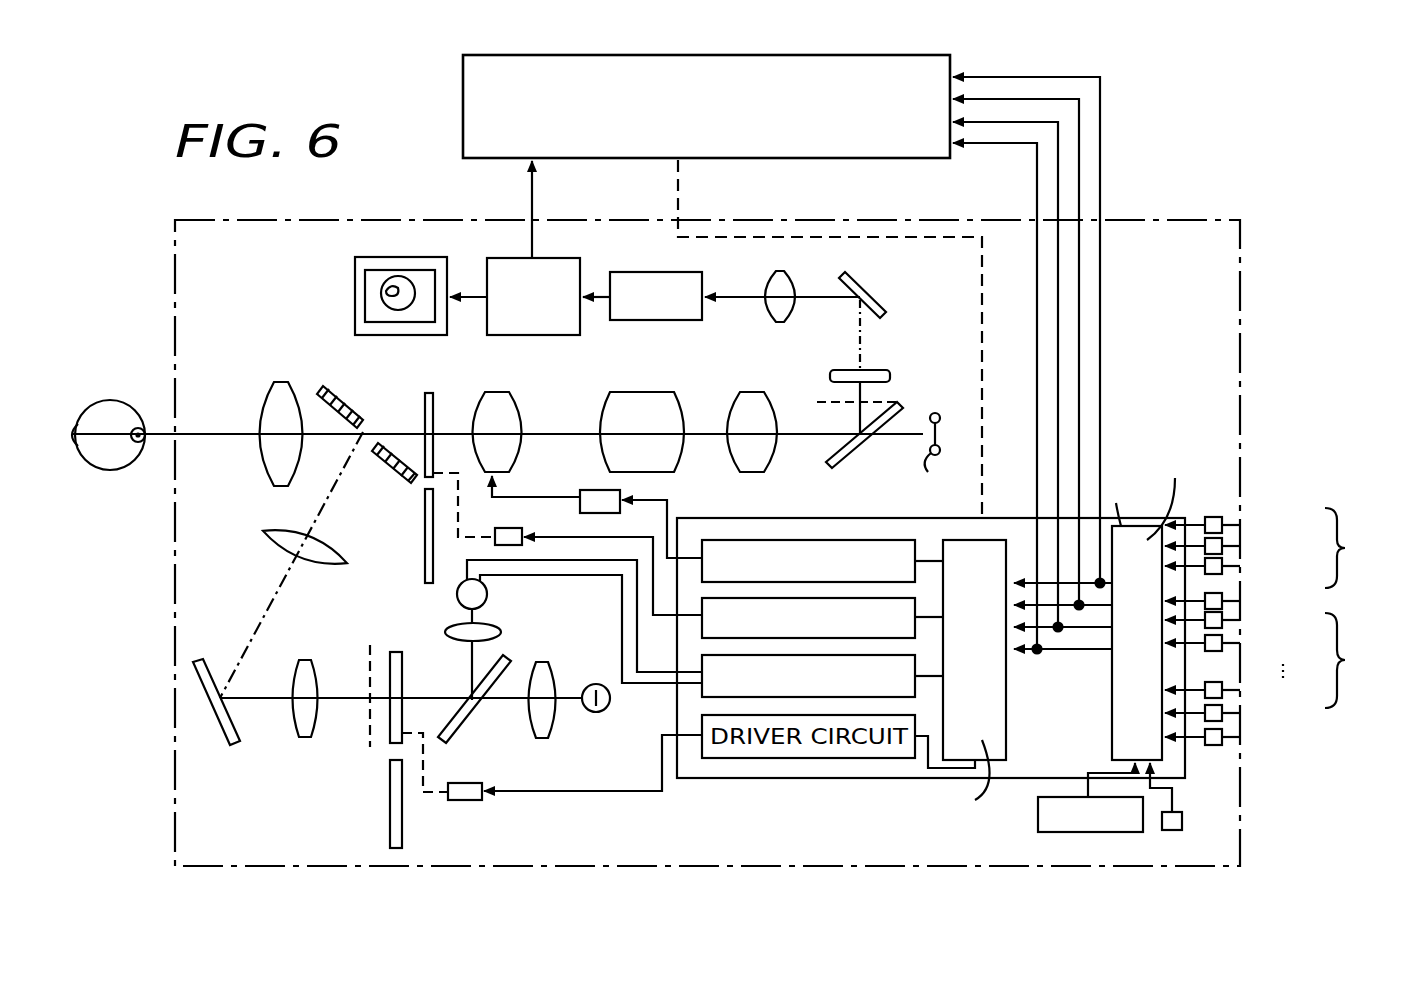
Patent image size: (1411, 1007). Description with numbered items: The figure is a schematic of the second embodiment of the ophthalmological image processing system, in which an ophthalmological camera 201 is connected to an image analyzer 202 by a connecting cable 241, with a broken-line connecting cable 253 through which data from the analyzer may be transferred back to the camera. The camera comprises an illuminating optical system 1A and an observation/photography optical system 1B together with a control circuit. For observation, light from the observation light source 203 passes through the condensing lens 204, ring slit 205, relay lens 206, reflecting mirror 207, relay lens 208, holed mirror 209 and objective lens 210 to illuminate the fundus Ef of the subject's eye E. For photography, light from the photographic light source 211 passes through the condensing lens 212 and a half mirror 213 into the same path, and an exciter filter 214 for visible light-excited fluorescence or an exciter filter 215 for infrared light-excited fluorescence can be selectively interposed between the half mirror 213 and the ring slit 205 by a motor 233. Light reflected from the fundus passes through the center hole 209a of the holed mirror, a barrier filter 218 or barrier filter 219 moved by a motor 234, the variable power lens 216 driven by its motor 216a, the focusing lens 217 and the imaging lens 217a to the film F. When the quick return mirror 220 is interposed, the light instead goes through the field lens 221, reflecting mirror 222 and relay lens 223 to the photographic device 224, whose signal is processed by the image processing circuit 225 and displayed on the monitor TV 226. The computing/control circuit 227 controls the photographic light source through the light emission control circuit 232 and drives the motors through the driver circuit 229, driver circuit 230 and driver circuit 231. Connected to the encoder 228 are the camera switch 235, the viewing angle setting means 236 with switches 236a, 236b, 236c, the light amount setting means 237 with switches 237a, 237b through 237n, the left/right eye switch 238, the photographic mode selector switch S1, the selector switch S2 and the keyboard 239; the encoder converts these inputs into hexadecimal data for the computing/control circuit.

The ophthalmological camera 201 is at (1162, 222).
The image analyzer 202 is at (953, 60).
The connecting cable 253 is at (965, 237).
The connecting cable 241 is at (1112, 165).
The image processing circuit 225 is at (515, 258).
The monitor TV 226 is at (355, 297).
The photographic device 224 is at (660, 272).
The relay lens 223 is at (783, 322).
The reflecting mirror 222 is at (870, 292).
The field lens 221 is at (878, 370).
The quick return mirror 220 is at (870, 445).
The photographic film F is at (926, 450).
The subject's eye E is at (108, 437).
The fundus Ef is at (78, 445).
The objective lens 210 is at (280, 382).
The center hole 209a is at (370, 426).
The holed mirror 209 is at (408, 482).
The barrier filter 218 is at (443, 367).
The barrier filter 219 is at (425, 560).
The relay lens 208 is at (283, 548).
The variable power lens 216 is at (518, 363).
The observation/photography optical system 1B is at (548, 424).
The focusing lens 217 is at (650, 392).
The imaging lens 217a is at (778, 366).
The motor 216a is at (600, 490).
The motor 234 is at (500, 528).
The photographic light source 211 is at (489, 592).
The condensing lens 212 is at (502, 634).
The reflecting mirror 207 is at (235, 750).
The relay lens 206 is at (333, 764).
The ring slit 205 is at (380, 745).
The exciter filter 214 is at (411, 699).
The exciter filter 215 is at (403, 828).
The half mirror 213 is at (445, 742).
The condensing lens 204 is at (535, 738).
The observation light source 203 is at (598, 712).
The motor 233 is at (475, 800).
The illuminating optical system 1A is at (281, 785).
The driver circuit 230 is at (765, 758).
The driver circuit 231 is at (703, 598).
The driver circuit 229 is at (802, 540).
The light emission control circuit 232 is at (702, 690).
The computing/control circuit 227 is at (1008, 732).
The encoder 228 is at (1112, 677).
The switch 236a is at (1240, 525).
The switch 236b is at (1240, 546).
The switch 236c is at (1240, 566).
The viewing angle setting means 236 is at (1345, 548).
The switch 238 is at (1240, 601).
The switch 237a is at (1240, 620).
The switch 237b is at (1240, 643).
The switch 237n is at (1240, 690).
The light amount setting means 237 is at (1345, 660).
The photographic mode selector switch S1 is at (1240, 713).
The selector switch S2 is at (1240, 737).
The keyboard 239 is at (1115, 832).
The camera switch 235 is at (1170, 830).